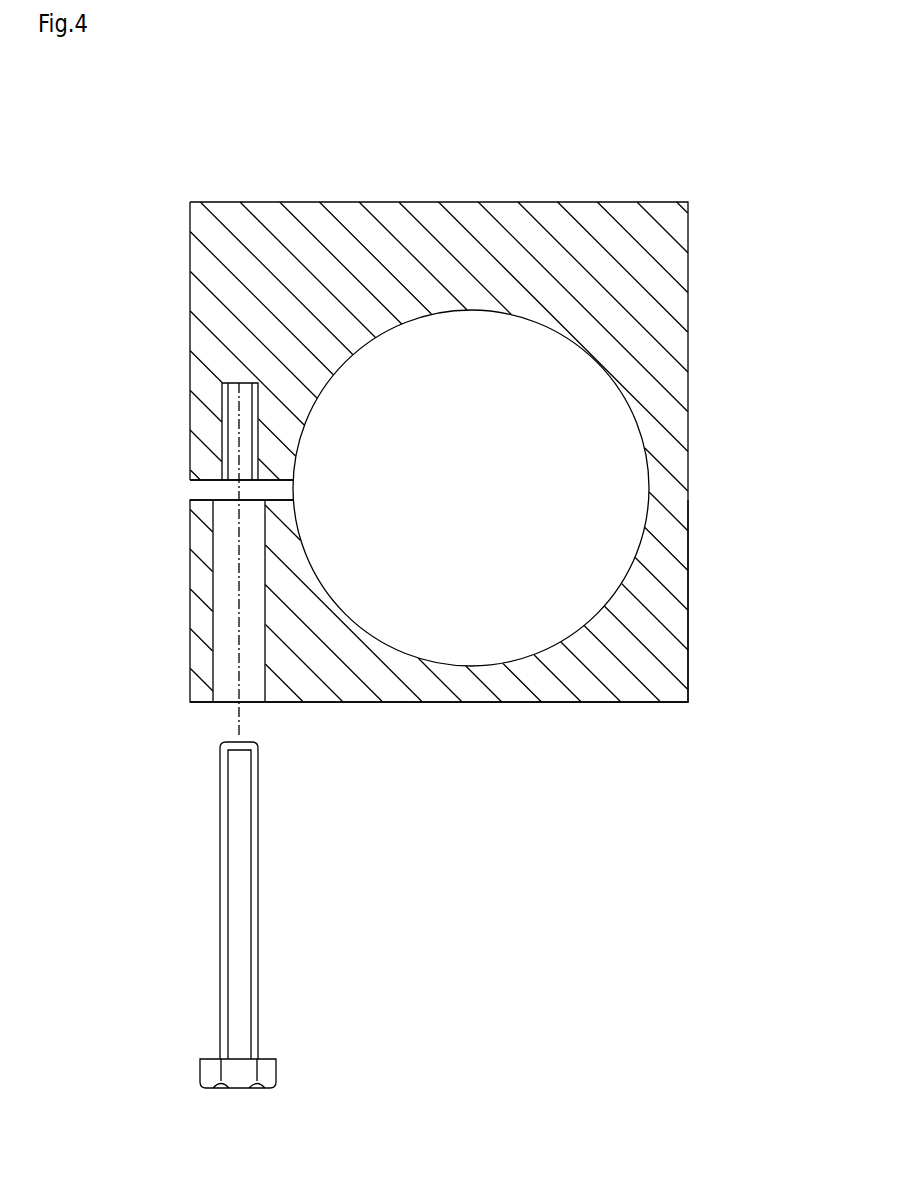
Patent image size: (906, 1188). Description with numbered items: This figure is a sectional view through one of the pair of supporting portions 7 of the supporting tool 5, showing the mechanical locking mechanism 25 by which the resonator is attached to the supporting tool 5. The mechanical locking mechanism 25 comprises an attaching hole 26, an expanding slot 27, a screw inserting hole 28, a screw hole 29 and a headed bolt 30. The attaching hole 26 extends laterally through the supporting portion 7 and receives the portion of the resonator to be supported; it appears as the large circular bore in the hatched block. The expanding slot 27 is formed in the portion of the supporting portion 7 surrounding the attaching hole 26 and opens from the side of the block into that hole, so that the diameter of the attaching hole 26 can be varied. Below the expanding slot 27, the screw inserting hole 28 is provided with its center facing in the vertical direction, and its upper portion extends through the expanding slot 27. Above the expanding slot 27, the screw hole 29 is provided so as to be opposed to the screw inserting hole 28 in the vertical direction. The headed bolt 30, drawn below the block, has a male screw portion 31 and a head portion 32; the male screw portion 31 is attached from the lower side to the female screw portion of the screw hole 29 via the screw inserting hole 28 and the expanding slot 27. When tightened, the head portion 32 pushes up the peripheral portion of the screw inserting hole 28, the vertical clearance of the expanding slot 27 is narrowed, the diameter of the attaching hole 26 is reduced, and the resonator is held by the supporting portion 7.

The supporting tool 5 is at (412, 210).
The supporting portion 7 is at (591, 689).
The mechanical locking mechanism 25 is at (357, 347).
The attaching hole 26 is at (513, 386).
The expanding slot 27 is at (205, 491).
The screw inserting hole 28 is at (228, 590).
The screw hole 29 is at (222, 405).
The headed bolt 30 is at (184, 949).
The male screw portion 31 is at (222, 806).
The head portion 32 is at (200, 1062).